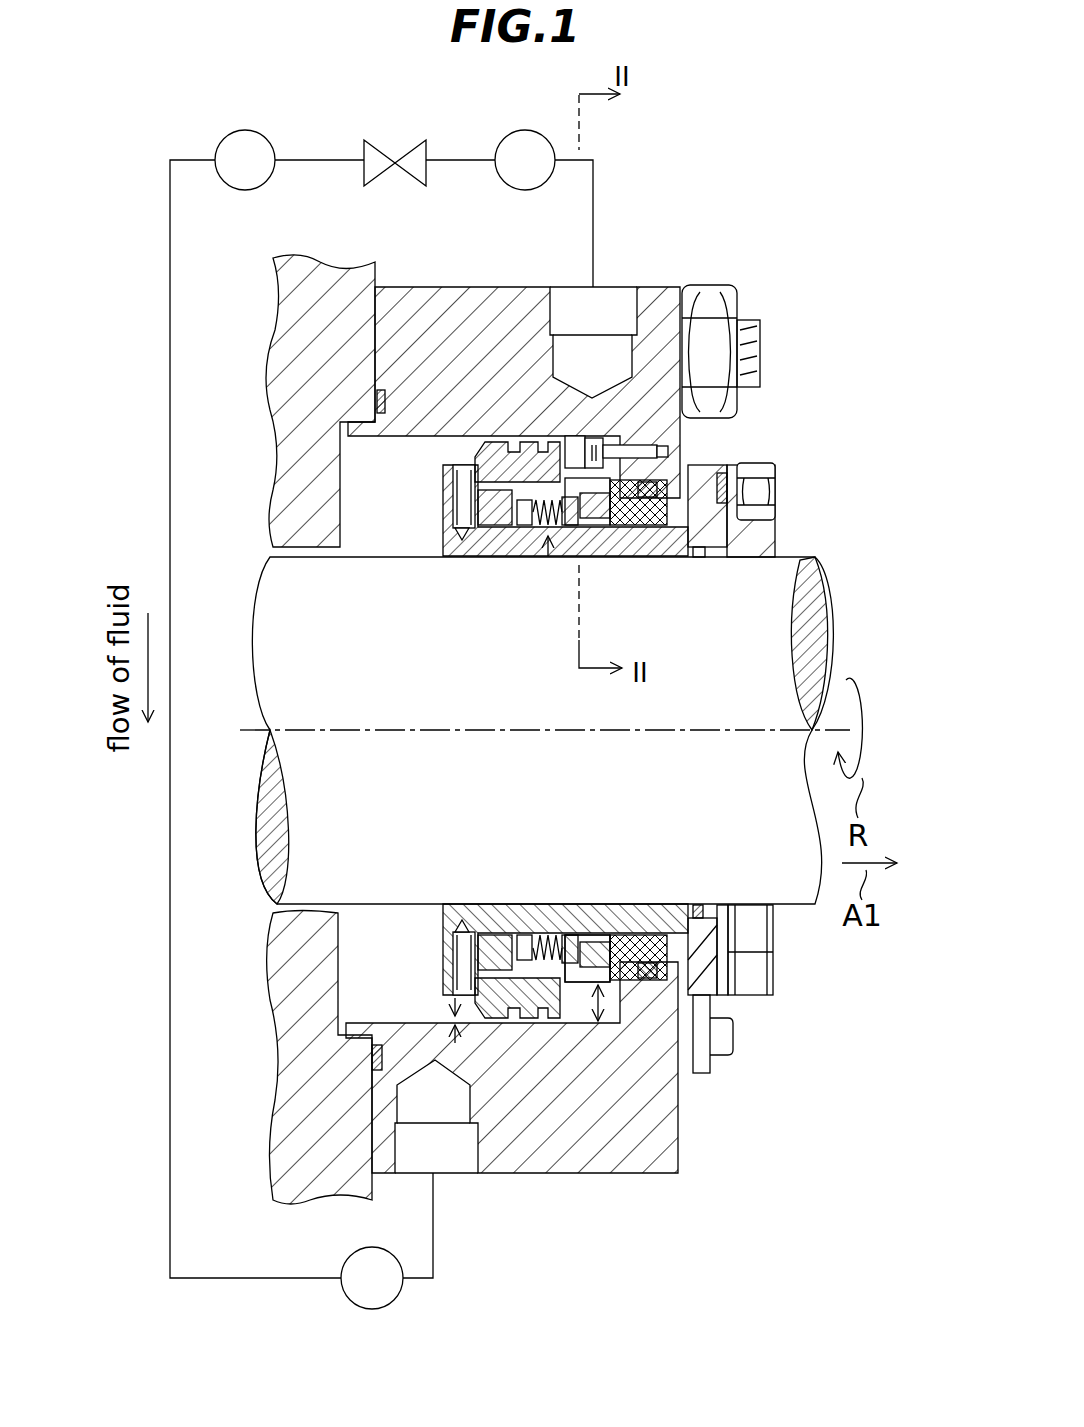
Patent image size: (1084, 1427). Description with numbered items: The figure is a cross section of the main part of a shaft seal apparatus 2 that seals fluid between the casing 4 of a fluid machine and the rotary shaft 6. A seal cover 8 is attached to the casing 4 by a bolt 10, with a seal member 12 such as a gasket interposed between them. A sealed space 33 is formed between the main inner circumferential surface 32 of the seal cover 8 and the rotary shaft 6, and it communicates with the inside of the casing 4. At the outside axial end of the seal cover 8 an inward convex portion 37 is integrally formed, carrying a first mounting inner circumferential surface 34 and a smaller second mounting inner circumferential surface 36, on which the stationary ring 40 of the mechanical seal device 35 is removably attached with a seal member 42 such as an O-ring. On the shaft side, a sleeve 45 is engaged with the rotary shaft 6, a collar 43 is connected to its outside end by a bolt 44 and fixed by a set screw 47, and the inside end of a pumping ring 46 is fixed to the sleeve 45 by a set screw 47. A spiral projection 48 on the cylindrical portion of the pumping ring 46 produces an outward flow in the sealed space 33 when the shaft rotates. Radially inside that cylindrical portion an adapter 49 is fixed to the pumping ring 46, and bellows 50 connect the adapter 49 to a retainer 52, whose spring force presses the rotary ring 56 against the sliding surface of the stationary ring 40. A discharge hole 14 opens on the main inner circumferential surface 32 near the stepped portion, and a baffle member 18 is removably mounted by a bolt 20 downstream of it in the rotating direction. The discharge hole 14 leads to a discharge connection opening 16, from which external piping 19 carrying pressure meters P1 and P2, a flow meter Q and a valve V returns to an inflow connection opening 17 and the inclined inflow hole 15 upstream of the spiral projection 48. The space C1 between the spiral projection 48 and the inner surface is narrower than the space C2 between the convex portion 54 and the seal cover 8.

The shaft seal apparatus 2 is at (690, 240).
The casing 4 is at (290, 342).
The rotary shaft 6 is at (265, 618).
The seal cover 8 is at (478, 320).
The bolt 10 is at (755, 350).
The seal member 12 is at (384, 390).
The discharge hole 14 is at (560, 422).
The inflow hole 15 is at (415, 1097).
The discharge connection opening 16 is at (622, 300).
The inflow connection opening 17 is at (455, 1153).
The baffle member 18 is at (680, 413).
The external piping 19 is at (170, 876).
The bolt 20 is at (665, 447).
The main inner circumferential surface 32 is at (346, 431).
The sealed space 33 is at (452, 545).
The first mounting inner circumferential surface 34 is at (556, 530).
The mechanical seal device 35 is at (548, 558).
The second mounting inner circumferential surface 36 is at (650, 530).
The inward convex portion 37 is at (730, 1032).
The stationary ring 40 is at (626, 528).
The seal member 42 is at (722, 487).
The collar 43 is at (765, 558).
The bolt 44 is at (770, 486).
The sleeve 45 is at (493, 920).
The pumping ring 46 is at (750, 925).
The set screw 47 is at (456, 500).
The spiral projection 48 is at (520, 1020).
The adapter 49 is at (457, 935).
The bellows 50 is at (535, 935).
The retainer 52 is at (568, 935).
The convex portion 54 is at (580, 988).
The rotary ring 56 is at (625, 945).
The flow meter Q is at (245, 160).
The valve V is at (385, 150).
The pressure meter P1 is at (525, 160).
The pressure meter P2 is at (372, 1278).
The space C1 is at (452, 1010).
The space C2 is at (640, 1003).